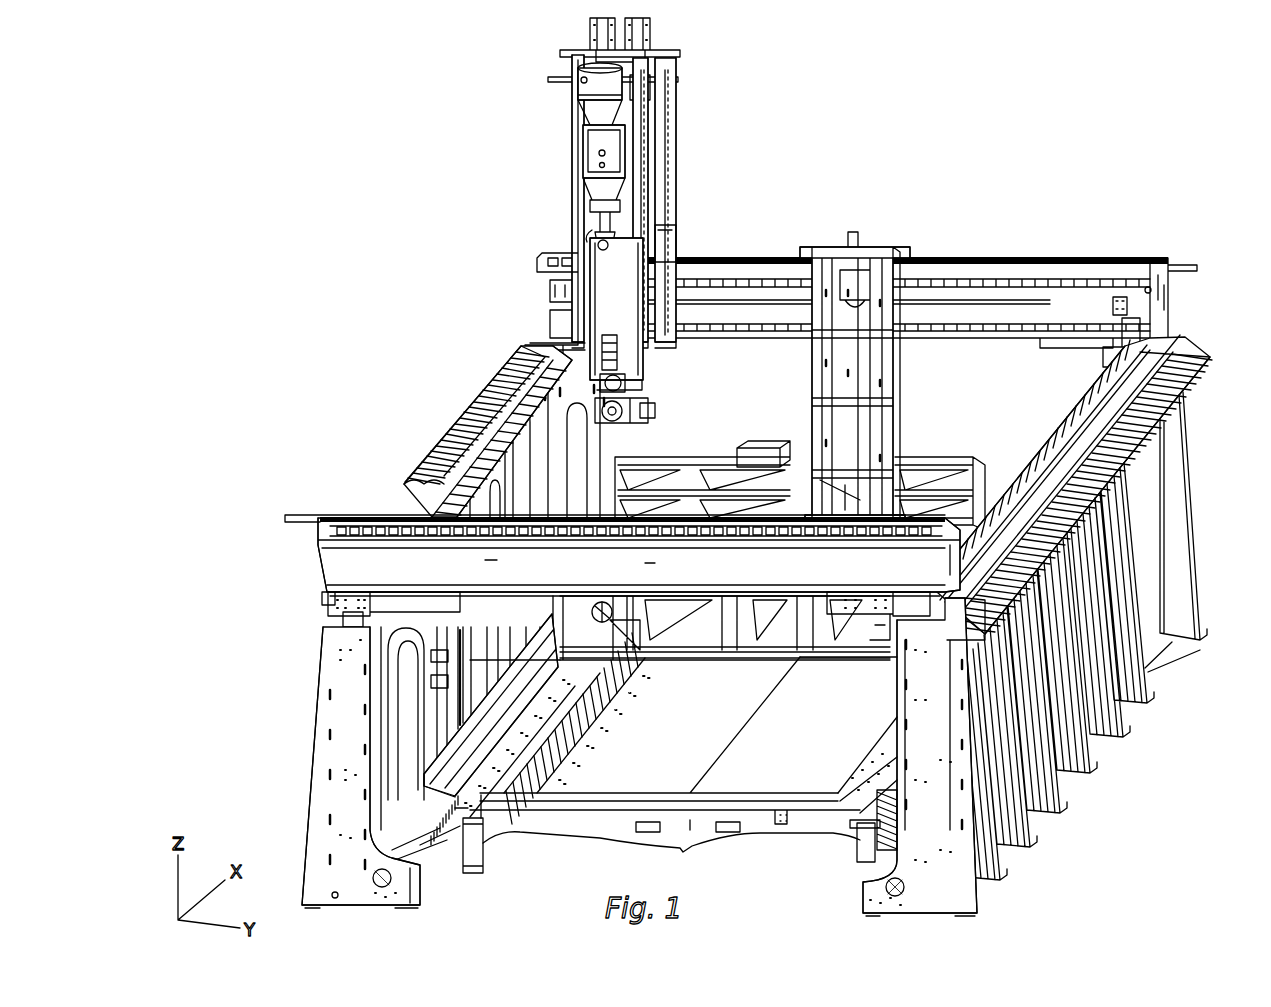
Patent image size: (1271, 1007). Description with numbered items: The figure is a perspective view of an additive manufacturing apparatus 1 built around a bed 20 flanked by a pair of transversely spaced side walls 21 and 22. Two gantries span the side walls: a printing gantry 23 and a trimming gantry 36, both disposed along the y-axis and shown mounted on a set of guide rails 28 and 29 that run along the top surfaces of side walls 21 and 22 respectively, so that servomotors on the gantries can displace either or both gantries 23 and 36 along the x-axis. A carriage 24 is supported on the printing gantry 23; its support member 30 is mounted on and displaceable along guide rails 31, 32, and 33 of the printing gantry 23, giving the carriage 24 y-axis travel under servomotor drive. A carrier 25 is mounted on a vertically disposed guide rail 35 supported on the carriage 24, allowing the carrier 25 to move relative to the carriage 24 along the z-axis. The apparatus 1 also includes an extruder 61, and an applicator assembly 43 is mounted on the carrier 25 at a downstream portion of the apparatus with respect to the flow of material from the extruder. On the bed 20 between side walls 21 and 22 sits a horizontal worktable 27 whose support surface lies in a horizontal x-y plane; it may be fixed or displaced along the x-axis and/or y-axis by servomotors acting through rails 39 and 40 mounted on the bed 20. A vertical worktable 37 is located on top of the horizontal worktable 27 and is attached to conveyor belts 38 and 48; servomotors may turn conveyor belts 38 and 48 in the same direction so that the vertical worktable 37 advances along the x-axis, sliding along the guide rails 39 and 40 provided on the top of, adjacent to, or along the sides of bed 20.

The additive manufacturing apparatus 1 is at (765, 467).
The bed 20 is at (644, 734).
The side wall 21 is at (318, 722).
The side wall 22 is at (1066, 625).
The printing gantry 23 is at (924, 286).
The carriage 24 is at (644, 183).
The carrier 25 is at (578, 230).
The horizontal worktable 27 is at (660, 719).
The guide rail 28 is at (443, 480).
The guide rail 29 is at (1050, 440).
The support member 30 is at (666, 240).
The guide rail 31 is at (796, 248).
The guide rail 32 is at (748, 265).
The guide rail 33 is at (753, 331).
The vertically disposed guide rail 35 is at (652, 342).
The trimming gantry 36 is at (360, 517).
The vertical worktable 37 is at (725, 455).
The conveyor belt 38 is at (675, 765).
The rail 39 is at (505, 812).
The rail 40 is at (835, 808).
The applicator assembly 43 is at (612, 428).
The conveyor belt 48 is at (832, 768).
The extruder 61 is at (627, 205).